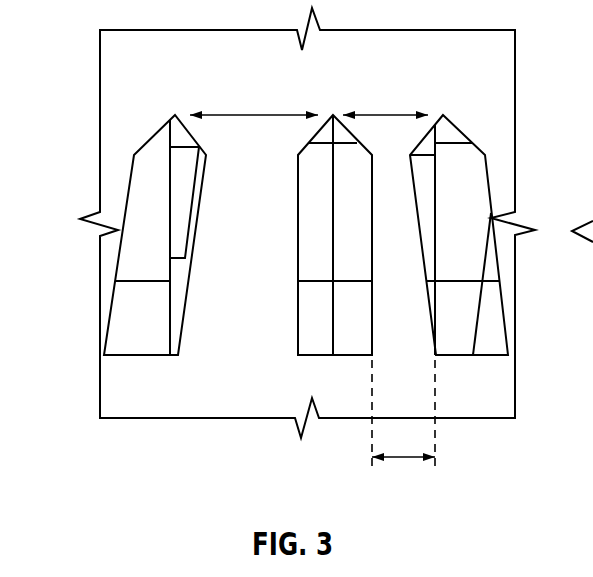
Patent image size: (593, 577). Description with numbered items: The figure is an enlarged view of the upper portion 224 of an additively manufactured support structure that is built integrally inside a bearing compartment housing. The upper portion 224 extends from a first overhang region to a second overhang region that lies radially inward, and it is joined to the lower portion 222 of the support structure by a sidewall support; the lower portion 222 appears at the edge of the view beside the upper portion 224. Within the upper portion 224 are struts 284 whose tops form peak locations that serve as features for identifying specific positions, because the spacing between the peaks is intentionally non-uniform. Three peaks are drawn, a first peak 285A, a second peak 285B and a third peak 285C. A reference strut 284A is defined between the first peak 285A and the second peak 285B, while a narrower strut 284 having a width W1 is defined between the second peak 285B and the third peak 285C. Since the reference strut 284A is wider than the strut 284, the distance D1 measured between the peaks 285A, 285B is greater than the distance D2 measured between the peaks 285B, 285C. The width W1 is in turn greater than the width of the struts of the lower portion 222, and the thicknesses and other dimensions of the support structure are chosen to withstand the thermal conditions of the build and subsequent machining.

The lower portion 222 is at (592, 105).
The upper portion 224 is at (112, 167).
The strut 284 is at (408, 328).
The reference strut 284A is at (240, 280).
The peak 285A is at (175, 116).
The peak 285B is at (333, 115).
The peak 285C is at (443, 115).
The distance between peaks 285A and 285B D1 is at (262, 113).
The distance between peaks 285B and 285C D2 is at (387, 112).
The width of strut W1 is at (403, 480).